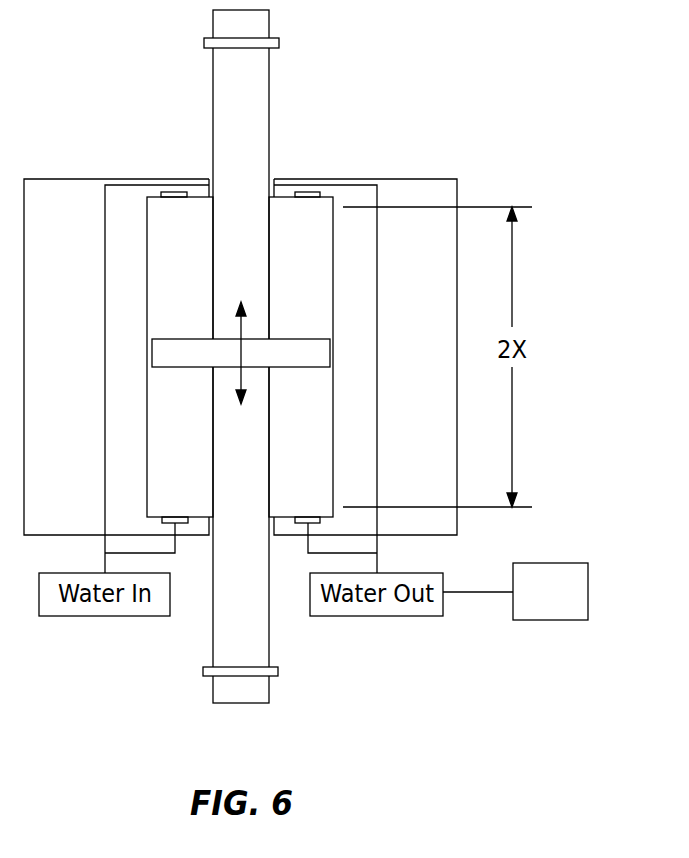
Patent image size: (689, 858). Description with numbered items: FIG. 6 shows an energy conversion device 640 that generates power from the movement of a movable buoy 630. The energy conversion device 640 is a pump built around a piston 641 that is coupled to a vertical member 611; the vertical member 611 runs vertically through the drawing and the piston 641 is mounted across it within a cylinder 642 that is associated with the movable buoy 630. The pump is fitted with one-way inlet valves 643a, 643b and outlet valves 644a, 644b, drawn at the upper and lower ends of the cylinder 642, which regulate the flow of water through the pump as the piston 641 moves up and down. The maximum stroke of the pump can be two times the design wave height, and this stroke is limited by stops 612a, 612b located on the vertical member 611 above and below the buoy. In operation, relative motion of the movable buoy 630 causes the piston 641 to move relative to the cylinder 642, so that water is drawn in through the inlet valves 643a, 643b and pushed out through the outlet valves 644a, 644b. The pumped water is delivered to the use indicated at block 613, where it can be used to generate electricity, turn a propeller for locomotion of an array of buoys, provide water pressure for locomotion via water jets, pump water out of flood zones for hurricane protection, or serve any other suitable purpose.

The vertical member 611 is at (269, 78).
The stop 612a is at (204, 43).
The stop 612b is at (203, 672).
The block 613 is at (573, 605).
The movable buoy 630 is at (428, 179).
The energy conversion device 640 is at (290, 162).
The piston 641 is at (298, 369).
The cylinder 642 is at (147, 294).
The one-way inlet valve 643a is at (174, 197).
The one-way inlet valve 643b is at (174, 517).
The outlet valve 644a is at (303, 197).
The outlet valve 644b is at (304, 517).